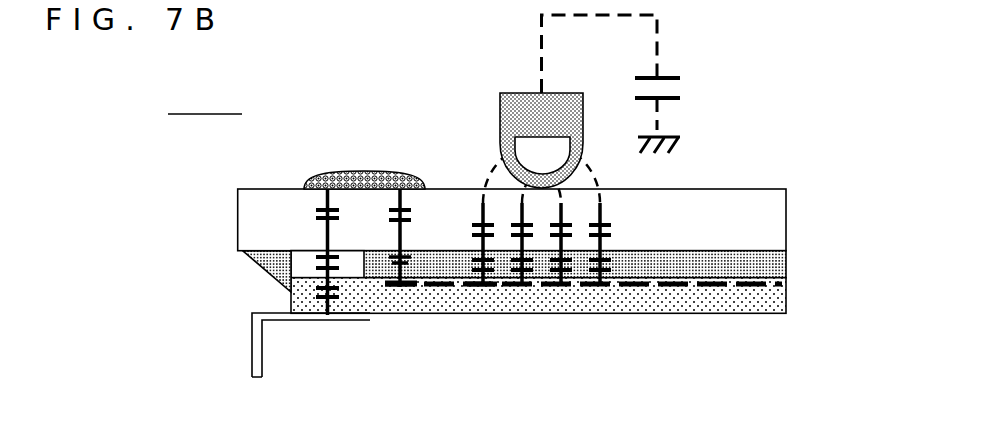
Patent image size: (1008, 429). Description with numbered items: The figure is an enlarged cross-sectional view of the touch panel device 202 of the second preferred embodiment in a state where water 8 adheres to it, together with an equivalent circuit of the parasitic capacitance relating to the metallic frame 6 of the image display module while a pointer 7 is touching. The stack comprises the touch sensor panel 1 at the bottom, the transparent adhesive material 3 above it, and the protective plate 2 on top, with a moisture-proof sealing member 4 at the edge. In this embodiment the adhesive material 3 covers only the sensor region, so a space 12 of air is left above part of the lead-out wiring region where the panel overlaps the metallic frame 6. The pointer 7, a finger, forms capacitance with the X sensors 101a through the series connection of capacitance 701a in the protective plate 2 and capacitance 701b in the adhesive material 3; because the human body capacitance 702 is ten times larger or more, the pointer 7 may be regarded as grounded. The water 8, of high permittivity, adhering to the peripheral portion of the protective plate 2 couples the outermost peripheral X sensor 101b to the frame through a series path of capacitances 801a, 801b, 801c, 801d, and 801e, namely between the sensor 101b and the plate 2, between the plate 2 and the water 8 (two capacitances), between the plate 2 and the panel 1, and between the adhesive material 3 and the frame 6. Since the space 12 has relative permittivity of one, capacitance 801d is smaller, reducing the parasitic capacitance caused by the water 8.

The touch sensor panel 1 is at (786, 302).
The protective plate 2 is at (782, 220).
The transparent adhesive material 3 is at (786, 268).
The moisture-proof sealing member 4 is at (263, 267).
The metallic frame 6 is at (250, 342).
The pointer 7 is at (522, 98).
The water 8 is at (357, 172).
The space 12 is at (353, 260).
The X sensors 101a is at (495, 290).
The outermost peripheral X sensor 101b is at (417, 290).
The touch panel device 202 is at (205, 99).
The capacitance in the protective plate 701a is at (618, 230).
The capacitance in the transparent adhesive material 701b is at (630, 270).
The human body capacitance 702 is at (680, 90).
The capacitance between outermost peripheral X sensor and protective plate 801a is at (377, 312).
The capacitance between protective plate and water 801b is at (418, 215).
The capacitance between protective plate and water 801c is at (305, 215).
The capacitance between protective plate and touch sensor panel 801d is at (313, 262).
The capacitance between transparent adhesive material and metallic frame 801e is at (313, 293).